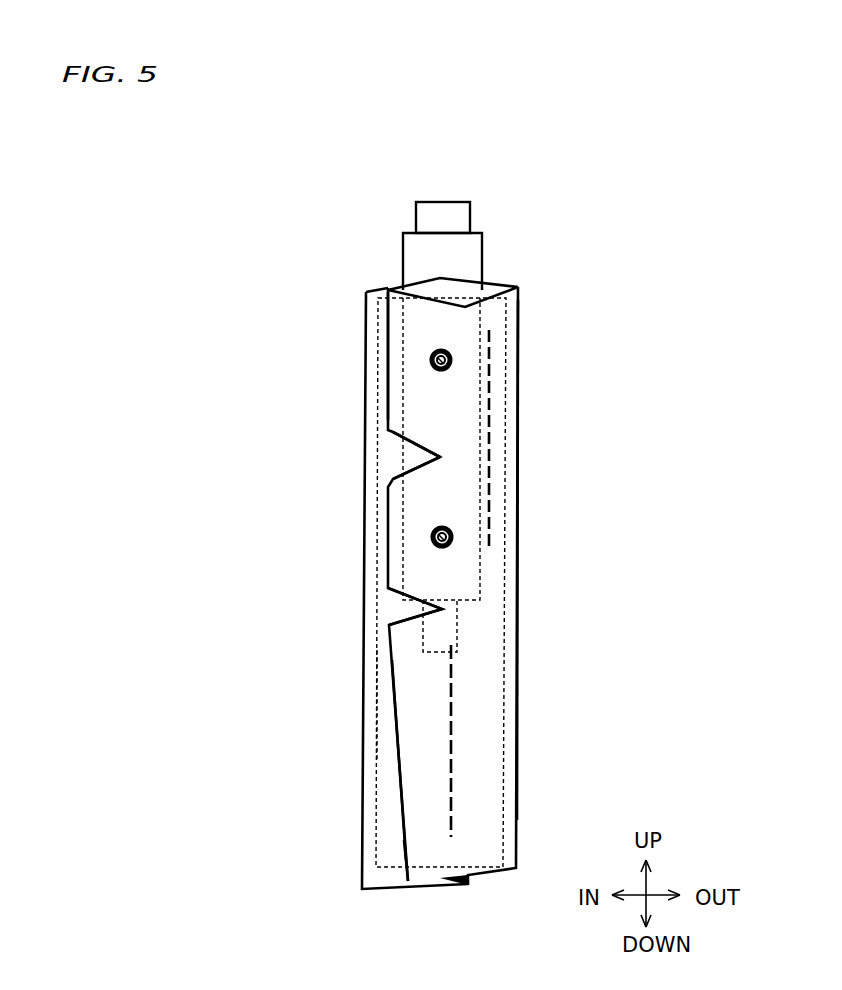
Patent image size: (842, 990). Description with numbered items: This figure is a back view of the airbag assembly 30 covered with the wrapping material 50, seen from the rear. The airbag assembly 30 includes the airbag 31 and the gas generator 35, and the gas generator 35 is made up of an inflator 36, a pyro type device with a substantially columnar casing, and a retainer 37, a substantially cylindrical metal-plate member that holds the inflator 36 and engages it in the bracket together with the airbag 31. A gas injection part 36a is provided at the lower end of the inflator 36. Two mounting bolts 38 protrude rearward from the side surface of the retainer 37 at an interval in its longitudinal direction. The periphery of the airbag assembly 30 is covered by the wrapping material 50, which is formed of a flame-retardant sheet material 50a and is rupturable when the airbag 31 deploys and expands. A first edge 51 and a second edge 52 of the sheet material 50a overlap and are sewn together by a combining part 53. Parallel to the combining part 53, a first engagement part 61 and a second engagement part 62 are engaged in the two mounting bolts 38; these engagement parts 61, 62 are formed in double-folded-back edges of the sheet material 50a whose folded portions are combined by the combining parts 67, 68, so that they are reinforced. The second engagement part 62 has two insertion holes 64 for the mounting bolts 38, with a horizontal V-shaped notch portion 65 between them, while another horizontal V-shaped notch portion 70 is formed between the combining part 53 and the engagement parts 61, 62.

The airbag assembly 30 is at (512, 313).
The airbag 31 is at (377, 697).
The gas generator 35 is at (387, 436).
The inflator 36 is at (432, 203).
The gas injection part 36a is at (432, 658).
The retainer 37 is at (403, 252).
The mounting bolts 38 is at (432, 360).
The wrapping material 50 is at (522, 332).
The sheet material 50a is at (518, 540).
The first edge 51 is at (413, 788).
The second edge 52 is at (410, 740).
The combining part 53 is at (452, 708).
The first engagement part 61 is at (428, 455).
The second engagement part 62 is at (388, 318).
The insertion holes 64 is at (452, 364).
The notch portion 65 is at (393, 477).
The combining part 67 is at (393, 443).
The combining part 68 is at (490, 413).
The notch portion 70 is at (390, 618).